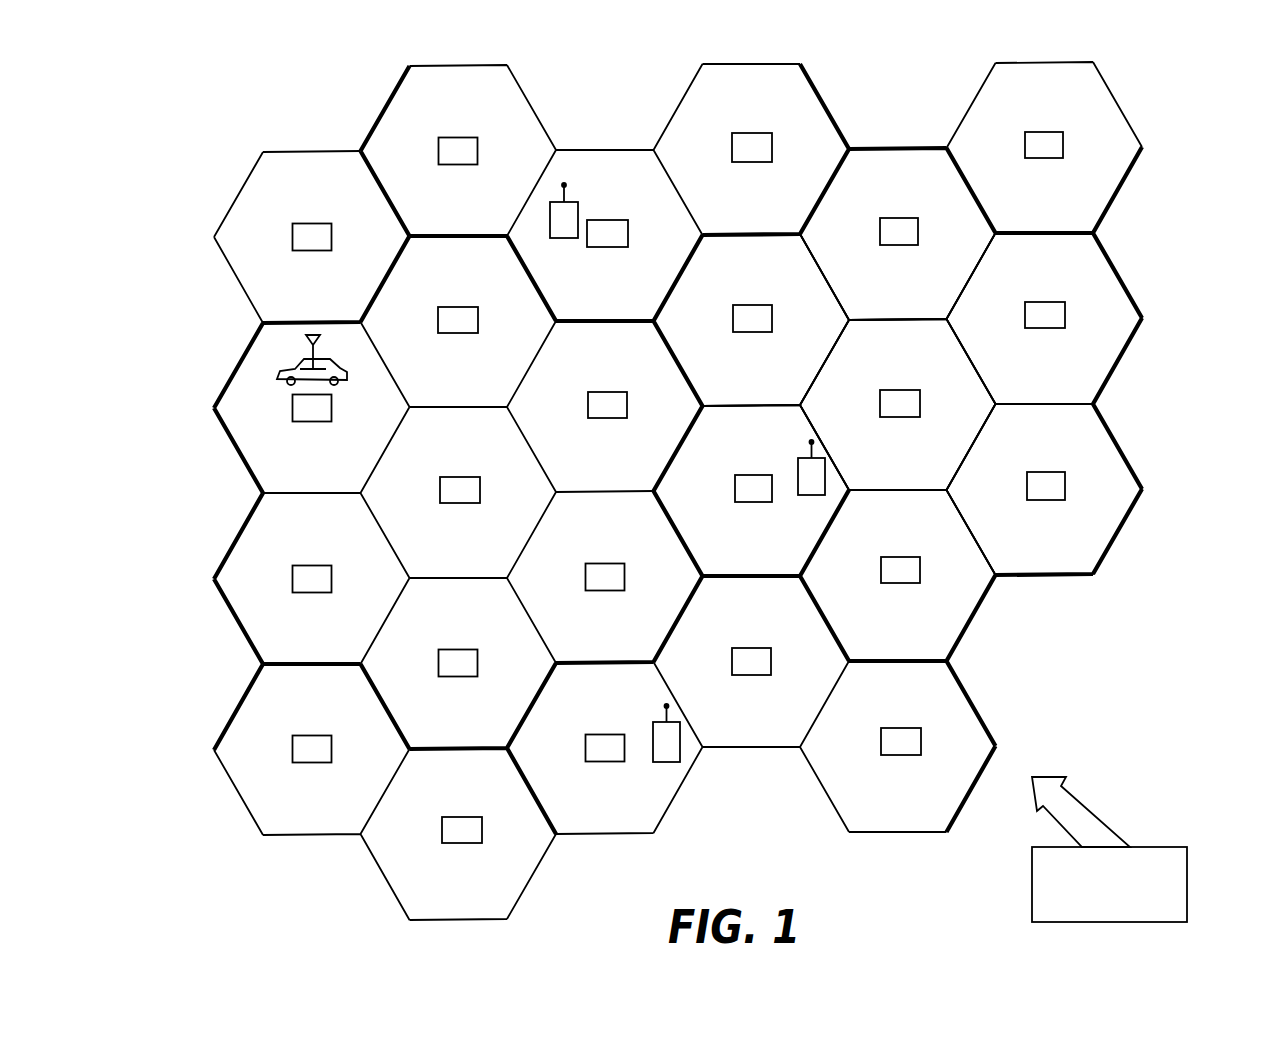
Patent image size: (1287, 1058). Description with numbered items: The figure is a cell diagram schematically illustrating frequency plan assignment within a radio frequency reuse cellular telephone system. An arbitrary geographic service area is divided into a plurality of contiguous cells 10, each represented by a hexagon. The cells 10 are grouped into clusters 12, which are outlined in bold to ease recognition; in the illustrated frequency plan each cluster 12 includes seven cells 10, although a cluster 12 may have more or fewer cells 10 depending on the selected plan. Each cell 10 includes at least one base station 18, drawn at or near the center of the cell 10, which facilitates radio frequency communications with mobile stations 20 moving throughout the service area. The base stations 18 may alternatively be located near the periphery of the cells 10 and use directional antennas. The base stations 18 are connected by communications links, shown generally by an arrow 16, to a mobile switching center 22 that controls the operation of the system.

The cell 10 is at (528, 100).
The cluster 12 is at (337, 322).
The communications link 16 is at (1092, 808).
The base station 18 is at (1047, 159).
The mobile station 20 is at (285, 376).
The mobile switching center 22 is at (1187, 867).